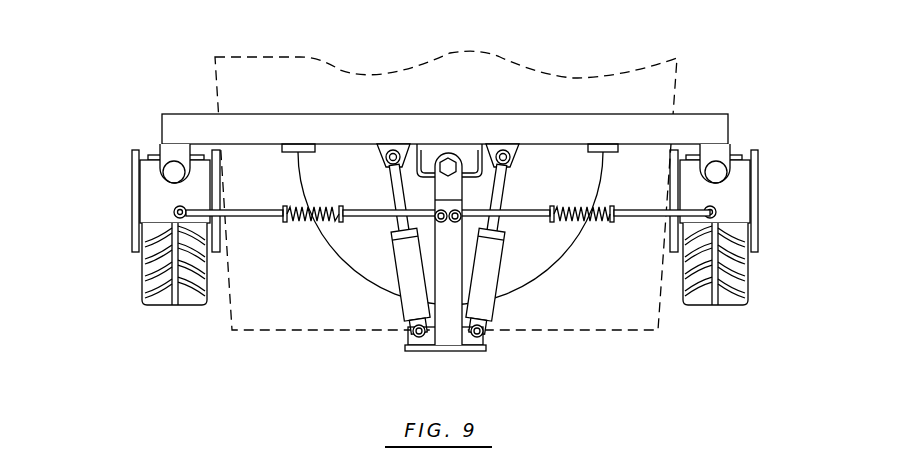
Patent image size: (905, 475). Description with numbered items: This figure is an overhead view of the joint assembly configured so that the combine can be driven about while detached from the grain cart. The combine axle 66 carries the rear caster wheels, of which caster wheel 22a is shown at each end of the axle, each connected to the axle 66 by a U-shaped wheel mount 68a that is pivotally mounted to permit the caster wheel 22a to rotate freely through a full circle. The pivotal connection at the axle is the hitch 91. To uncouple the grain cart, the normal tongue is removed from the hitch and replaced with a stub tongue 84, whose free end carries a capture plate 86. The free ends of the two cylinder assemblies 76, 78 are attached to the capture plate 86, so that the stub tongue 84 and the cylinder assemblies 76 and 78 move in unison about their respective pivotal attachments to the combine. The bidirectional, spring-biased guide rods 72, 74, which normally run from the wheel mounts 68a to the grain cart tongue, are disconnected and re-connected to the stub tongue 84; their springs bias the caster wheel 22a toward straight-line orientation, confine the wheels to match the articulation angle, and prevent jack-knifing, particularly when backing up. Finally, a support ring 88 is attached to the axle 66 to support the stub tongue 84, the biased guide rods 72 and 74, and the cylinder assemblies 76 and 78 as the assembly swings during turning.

The axle 66 is at (357, 130).
The hitch 91 is at (447, 128).
The U-shaped wheel mount 68a is at (153, 193).
The caster wheel 22a is at (155, 278).
The biased guide rod 72 is at (252, 220).
The biased guide rod 74 is at (645, 222).
The cylinder assembly 76 is at (412, 302).
The cylinder assembly 78 is at (485, 303).
The support ring 88 is at (543, 267).
The capture plate 86 is at (422, 353).
The stub tongue 84 is at (447, 337).